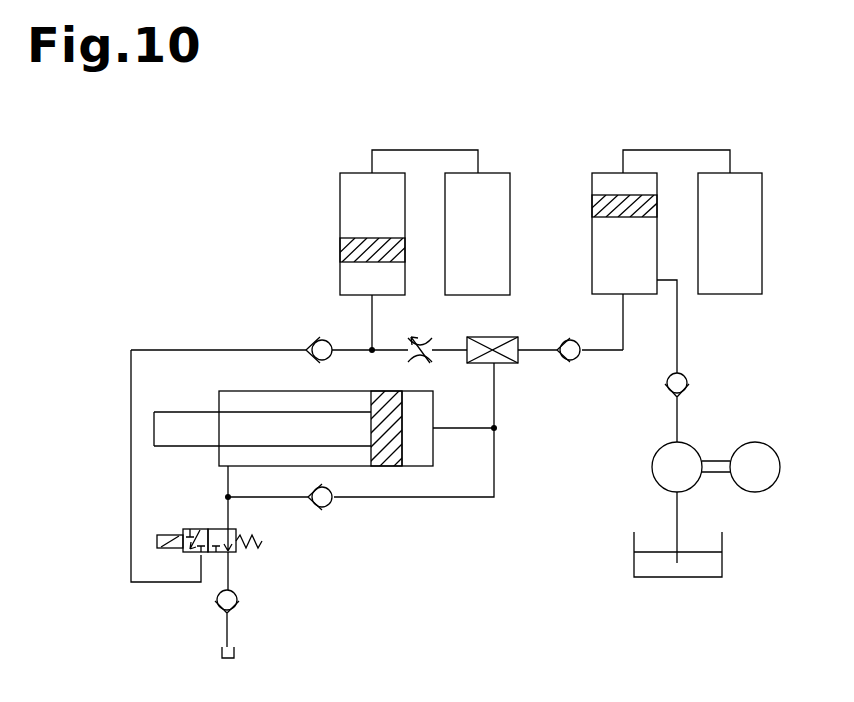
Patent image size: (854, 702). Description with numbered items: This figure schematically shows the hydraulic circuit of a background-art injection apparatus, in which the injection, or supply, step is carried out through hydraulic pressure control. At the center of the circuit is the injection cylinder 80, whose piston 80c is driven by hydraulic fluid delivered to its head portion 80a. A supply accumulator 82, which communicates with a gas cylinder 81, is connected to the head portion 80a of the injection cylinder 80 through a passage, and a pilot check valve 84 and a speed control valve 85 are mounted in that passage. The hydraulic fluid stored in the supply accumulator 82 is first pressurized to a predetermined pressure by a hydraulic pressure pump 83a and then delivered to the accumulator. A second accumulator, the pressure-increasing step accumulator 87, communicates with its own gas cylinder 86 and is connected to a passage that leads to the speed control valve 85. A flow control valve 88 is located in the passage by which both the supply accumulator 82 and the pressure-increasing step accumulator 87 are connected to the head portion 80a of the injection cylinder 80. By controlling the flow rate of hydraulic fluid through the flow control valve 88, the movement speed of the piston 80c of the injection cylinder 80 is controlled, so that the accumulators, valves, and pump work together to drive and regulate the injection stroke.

The injection cylinder 80 is at (248, 390).
The head portion 80a is at (430, 437).
The piston 80c is at (390, 466).
The gas cylinder 81 is at (753, 210).
The supply accumulator 82 is at (604, 243).
The hydraulic pressure pump 83a is at (658, 470).
The pilot check valve 84 is at (582, 365).
The speed control valve 85 is at (526, 364).
The gas cylinder 86 is at (498, 178).
The pressure-increasing step accumulator 87 is at (346, 199).
The flow control valve 88 is at (426, 346).